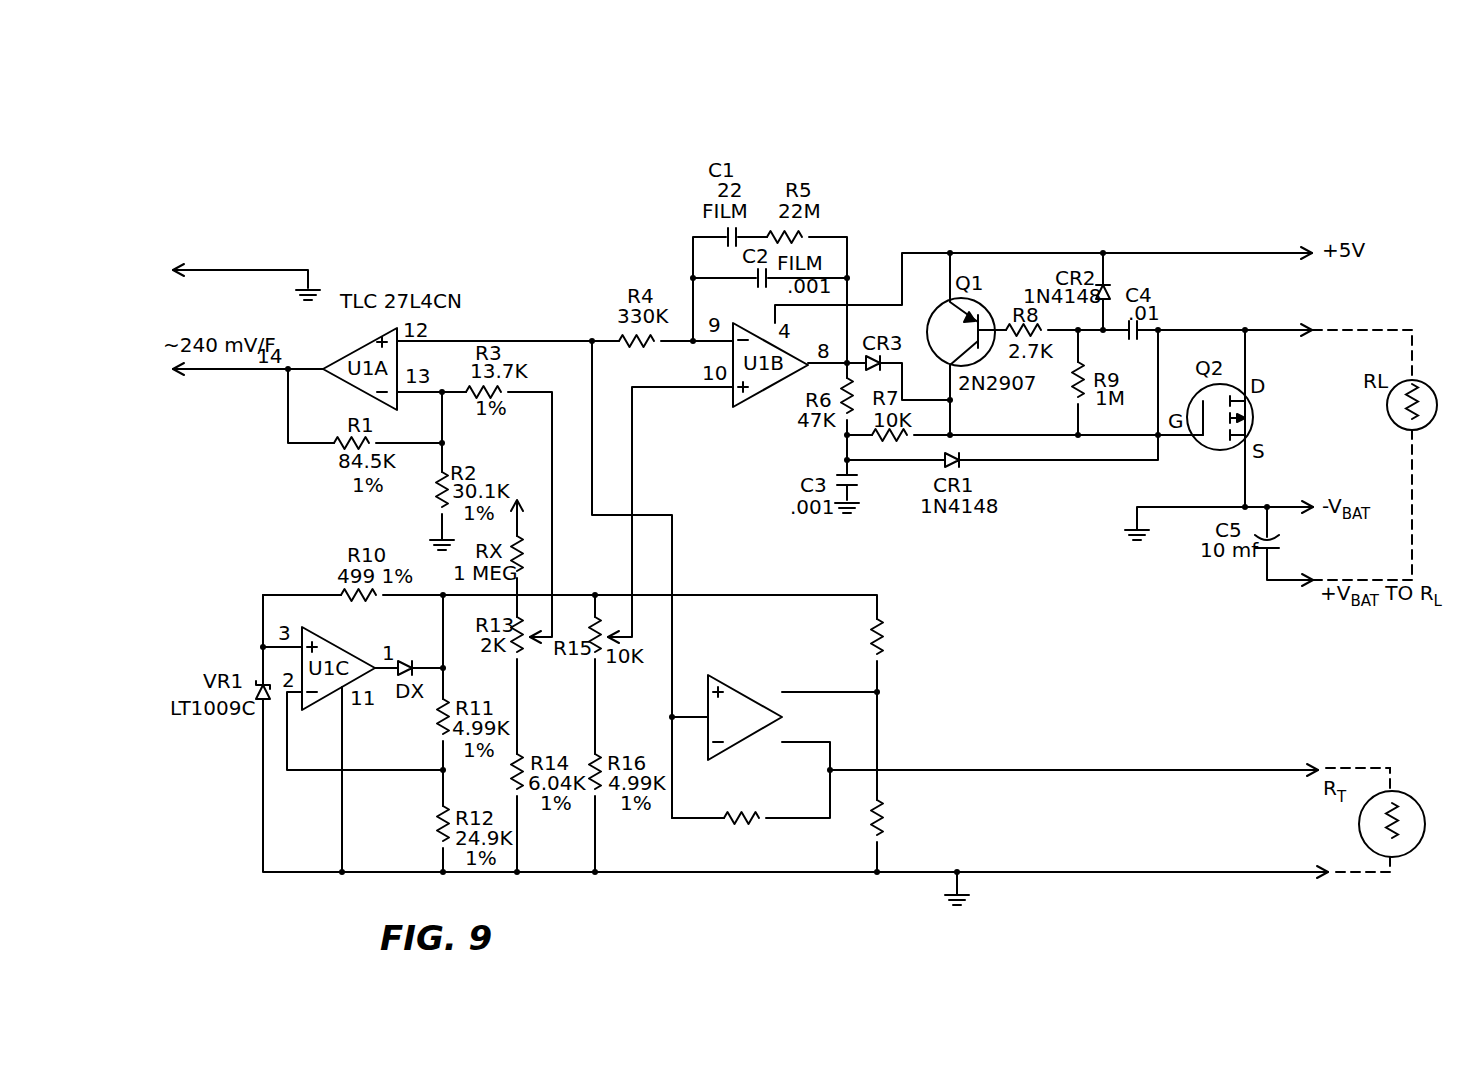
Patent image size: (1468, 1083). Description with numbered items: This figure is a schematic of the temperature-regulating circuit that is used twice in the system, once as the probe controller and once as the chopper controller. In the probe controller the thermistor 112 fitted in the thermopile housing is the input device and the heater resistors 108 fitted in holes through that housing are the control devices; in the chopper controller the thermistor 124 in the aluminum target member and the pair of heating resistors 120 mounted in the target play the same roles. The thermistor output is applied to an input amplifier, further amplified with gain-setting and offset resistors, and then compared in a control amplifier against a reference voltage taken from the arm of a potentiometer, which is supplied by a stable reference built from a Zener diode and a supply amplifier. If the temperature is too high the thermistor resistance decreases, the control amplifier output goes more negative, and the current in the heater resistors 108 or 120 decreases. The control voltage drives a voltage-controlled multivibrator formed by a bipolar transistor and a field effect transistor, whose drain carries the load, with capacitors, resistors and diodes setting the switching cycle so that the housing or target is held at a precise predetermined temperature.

The heater resistors 108 is at (1375, 455).
The heating resistors 120 is at (1390, 406).
The thermistor 112 is at (1385, 856).
The thermistor 124 is at (1420, 852).